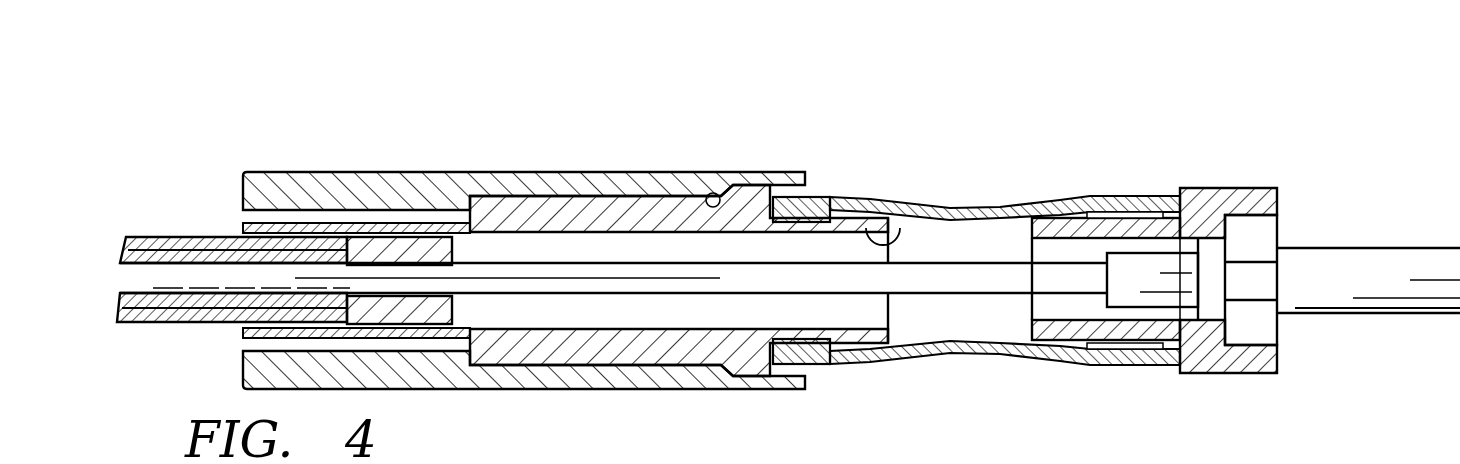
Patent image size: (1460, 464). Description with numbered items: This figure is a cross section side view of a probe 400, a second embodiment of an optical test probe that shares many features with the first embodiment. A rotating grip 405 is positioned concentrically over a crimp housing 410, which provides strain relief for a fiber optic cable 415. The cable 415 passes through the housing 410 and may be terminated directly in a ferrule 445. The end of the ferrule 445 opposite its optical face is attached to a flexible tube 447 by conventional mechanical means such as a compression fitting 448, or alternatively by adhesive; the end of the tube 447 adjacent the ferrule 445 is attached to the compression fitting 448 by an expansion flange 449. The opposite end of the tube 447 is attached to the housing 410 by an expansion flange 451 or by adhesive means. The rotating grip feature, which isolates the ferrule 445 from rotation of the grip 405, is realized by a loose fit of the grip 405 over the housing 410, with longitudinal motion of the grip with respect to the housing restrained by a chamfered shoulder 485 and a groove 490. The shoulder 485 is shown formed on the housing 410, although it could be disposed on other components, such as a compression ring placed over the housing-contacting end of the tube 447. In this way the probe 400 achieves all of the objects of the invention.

The probe 400 is at (606, 156).
The rotating grip 405 is at (316, 182).
The crimp housing 410 is at (500, 207).
The fiber optic cable 415 is at (174, 230).
The ferrule 445 is at (1368, 255).
The flexible tube 447 is at (1005, 205).
The compression fitting 448 is at (1228, 192).
The expansion flange 449 is at (1078, 355).
The expansion flange 451 is at (897, 228).
The chamfered shoulder 485 is at (768, 194).
The groove 490 is at (710, 194).